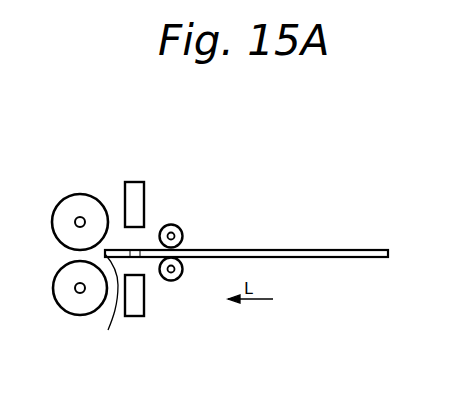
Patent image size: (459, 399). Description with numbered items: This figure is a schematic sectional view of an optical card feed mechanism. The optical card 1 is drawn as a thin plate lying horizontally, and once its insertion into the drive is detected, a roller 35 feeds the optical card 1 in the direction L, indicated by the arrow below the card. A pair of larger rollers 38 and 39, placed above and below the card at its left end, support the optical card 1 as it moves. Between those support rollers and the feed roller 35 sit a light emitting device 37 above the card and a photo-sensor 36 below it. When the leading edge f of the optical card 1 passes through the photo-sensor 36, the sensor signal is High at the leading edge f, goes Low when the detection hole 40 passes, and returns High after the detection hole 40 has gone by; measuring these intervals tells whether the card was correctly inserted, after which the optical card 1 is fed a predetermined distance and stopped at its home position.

The optical card 1 is at (359, 252).
The roller 35 is at (183, 231).
The photo-sensor 36 is at (146, 302).
The light emitting device 37 is at (136, 182).
The roller 38 is at (80, 194).
The roller 39 is at (72, 314).
The detection hole 40 is at (140, 248).
The leading edge f is at (110, 304).